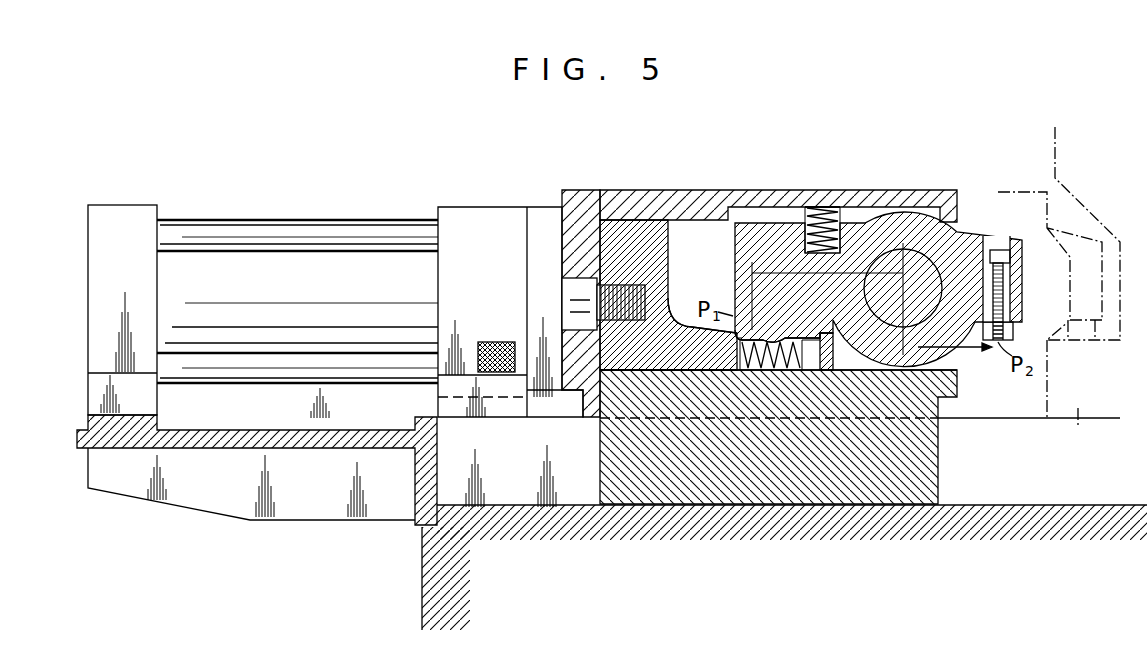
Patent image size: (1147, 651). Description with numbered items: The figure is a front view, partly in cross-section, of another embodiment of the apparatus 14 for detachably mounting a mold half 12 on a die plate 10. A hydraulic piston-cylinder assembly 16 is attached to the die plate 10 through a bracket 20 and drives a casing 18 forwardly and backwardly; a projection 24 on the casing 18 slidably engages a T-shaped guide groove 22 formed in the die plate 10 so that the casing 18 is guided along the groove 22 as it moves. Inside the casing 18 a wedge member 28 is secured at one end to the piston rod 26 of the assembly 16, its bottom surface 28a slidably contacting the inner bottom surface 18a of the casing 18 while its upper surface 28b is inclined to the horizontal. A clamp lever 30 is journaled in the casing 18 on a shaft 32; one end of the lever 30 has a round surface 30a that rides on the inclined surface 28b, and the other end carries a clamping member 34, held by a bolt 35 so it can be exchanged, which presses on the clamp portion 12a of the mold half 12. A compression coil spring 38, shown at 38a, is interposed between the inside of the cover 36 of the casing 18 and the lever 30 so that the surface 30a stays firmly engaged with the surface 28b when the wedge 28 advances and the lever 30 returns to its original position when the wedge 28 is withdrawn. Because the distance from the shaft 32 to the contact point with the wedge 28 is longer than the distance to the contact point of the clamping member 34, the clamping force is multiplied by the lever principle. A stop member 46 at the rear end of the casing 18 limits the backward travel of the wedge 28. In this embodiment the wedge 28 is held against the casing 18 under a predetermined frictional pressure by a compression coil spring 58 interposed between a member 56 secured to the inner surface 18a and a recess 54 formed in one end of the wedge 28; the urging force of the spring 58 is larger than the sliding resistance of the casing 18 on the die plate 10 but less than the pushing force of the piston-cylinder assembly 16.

The die plate 10 is at (437, 590).
The mold half 12 is at (1054, 178).
The clamp portion of the mold half 12a is at (1029, 398).
The actuator assembly 14 is at (467, 173).
The hydraulic piston-cylinder assembly 16 is at (293, 265).
The casing 18 is at (778, 261).
The inner bottom surface of the casing 18a is at (845, 371).
The bracket 20 is at (203, 490).
The T-shaped guide groove 22 is at (1040, 495).
The projection 24 is at (940, 488).
The piston rod 26 is at (567, 293).
The wedge member 28 is at (668, 314).
The bottom surface of the wedge 28a is at (663, 370).
The inclined upper surface of the wedge 28b is at (690, 322).
The clamp lever 30 is at (900, 256).
The round surface of the clamp lever 30a is at (775, 335).
The shaft 32 is at (910, 268).
The clamping member 34 is at (1012, 332).
The bolt 35 is at (1000, 250).
The cover 36 is at (680, 190).
The compression coil spring 38 is at (824, 205).
The spring seat 38a is at (810, 207).
The stop member 46 is at (586, 190).
The recess 54 is at (735, 372).
The member 56 is at (826, 368).
The compression coil spring 58 is at (775, 368).